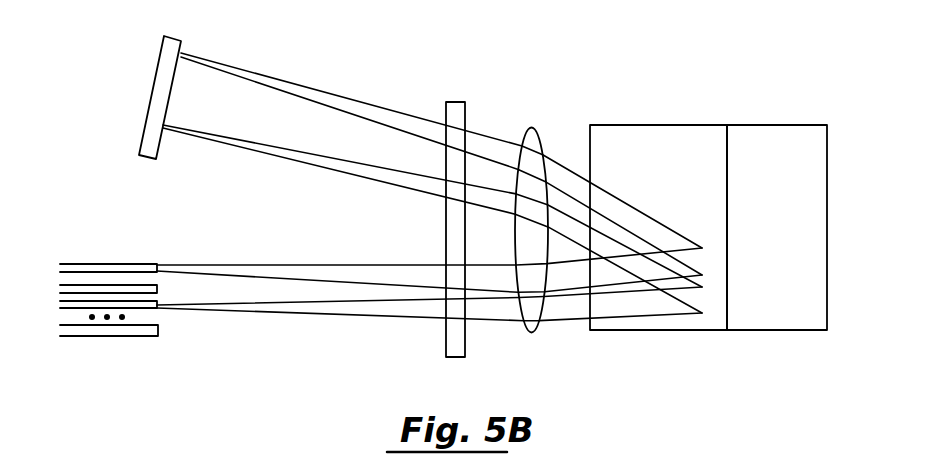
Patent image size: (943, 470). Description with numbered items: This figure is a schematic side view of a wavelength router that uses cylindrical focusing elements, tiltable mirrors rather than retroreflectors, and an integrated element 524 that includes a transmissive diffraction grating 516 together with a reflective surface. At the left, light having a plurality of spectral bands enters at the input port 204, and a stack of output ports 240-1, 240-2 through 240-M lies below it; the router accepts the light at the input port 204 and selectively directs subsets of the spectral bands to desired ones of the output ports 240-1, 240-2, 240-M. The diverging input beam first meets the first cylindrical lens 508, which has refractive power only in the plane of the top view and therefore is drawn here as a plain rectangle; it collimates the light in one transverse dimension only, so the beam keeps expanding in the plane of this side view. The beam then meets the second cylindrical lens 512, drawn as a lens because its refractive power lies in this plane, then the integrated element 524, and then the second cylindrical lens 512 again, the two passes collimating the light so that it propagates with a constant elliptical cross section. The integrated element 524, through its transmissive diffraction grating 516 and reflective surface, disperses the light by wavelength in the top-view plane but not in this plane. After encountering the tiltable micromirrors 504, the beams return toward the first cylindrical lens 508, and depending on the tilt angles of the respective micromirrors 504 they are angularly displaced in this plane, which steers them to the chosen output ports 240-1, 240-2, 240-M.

The tiltable micromirrors 504 is at (160, 58).
The first cylindrical lens 508 is at (453, 102).
The second cylindrical lens 512 is at (532, 127).
The transmissive diffraction grating 516 is at (660, 150).
The integrated element 524 is at (777, 150).
The input port 204 is at (90, 263).
The output port 240-1 is at (157, 290).
The output port 240-2 is at (158, 307).
The output port 240-M is at (117, 337).